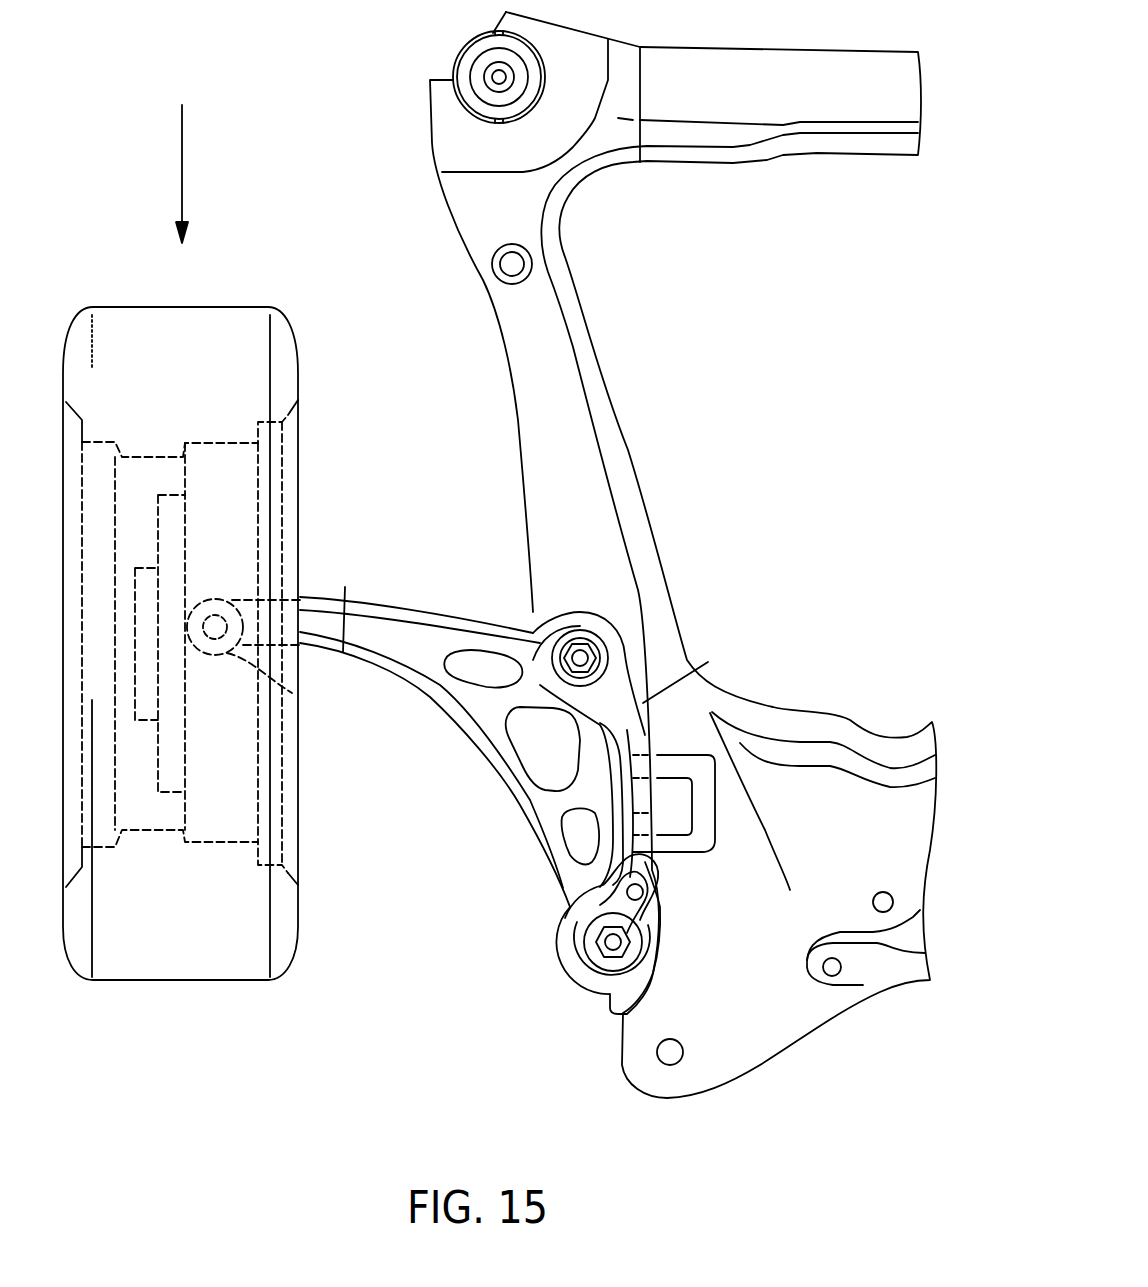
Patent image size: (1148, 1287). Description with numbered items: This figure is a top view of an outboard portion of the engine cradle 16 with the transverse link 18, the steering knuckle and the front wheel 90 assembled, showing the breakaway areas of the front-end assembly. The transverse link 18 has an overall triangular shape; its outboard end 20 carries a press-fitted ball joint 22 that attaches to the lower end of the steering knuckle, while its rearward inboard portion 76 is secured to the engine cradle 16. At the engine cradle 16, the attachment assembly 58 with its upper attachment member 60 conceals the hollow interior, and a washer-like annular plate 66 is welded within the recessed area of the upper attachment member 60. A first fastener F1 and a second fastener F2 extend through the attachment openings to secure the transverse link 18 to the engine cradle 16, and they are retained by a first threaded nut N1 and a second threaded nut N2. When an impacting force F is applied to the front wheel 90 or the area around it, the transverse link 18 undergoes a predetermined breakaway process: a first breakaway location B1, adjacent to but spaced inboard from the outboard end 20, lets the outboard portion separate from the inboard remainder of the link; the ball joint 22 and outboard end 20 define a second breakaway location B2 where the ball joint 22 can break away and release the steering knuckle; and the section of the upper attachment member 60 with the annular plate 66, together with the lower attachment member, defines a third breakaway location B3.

The engine cradle 16 is at (562, 438).
The transverse link 18 is at (430, 608).
The outboard end 20 is at (217, 597).
The ball joint 22 is at (217, 647).
The attachment assembly 58 is at (650, 764).
The upper attachment member 60 is at (640, 813).
The annular plate 66 is at (597, 673).
The rearward inboard portion 76 is at (590, 990).
The front wheel 90 is at (218, 342).
The first breakaway location B1 is at (347, 604).
The second breakaway location B2 is at (293, 693).
The third breakaway location B3 is at (553, 617).
The first threaded nut N1 is at (576, 642).
The second threaded nut N2 is at (600, 955).
The first fastener F1 is at (583, 653).
The second fastener F2 is at (617, 940).
The impacting force F is at (182, 165).